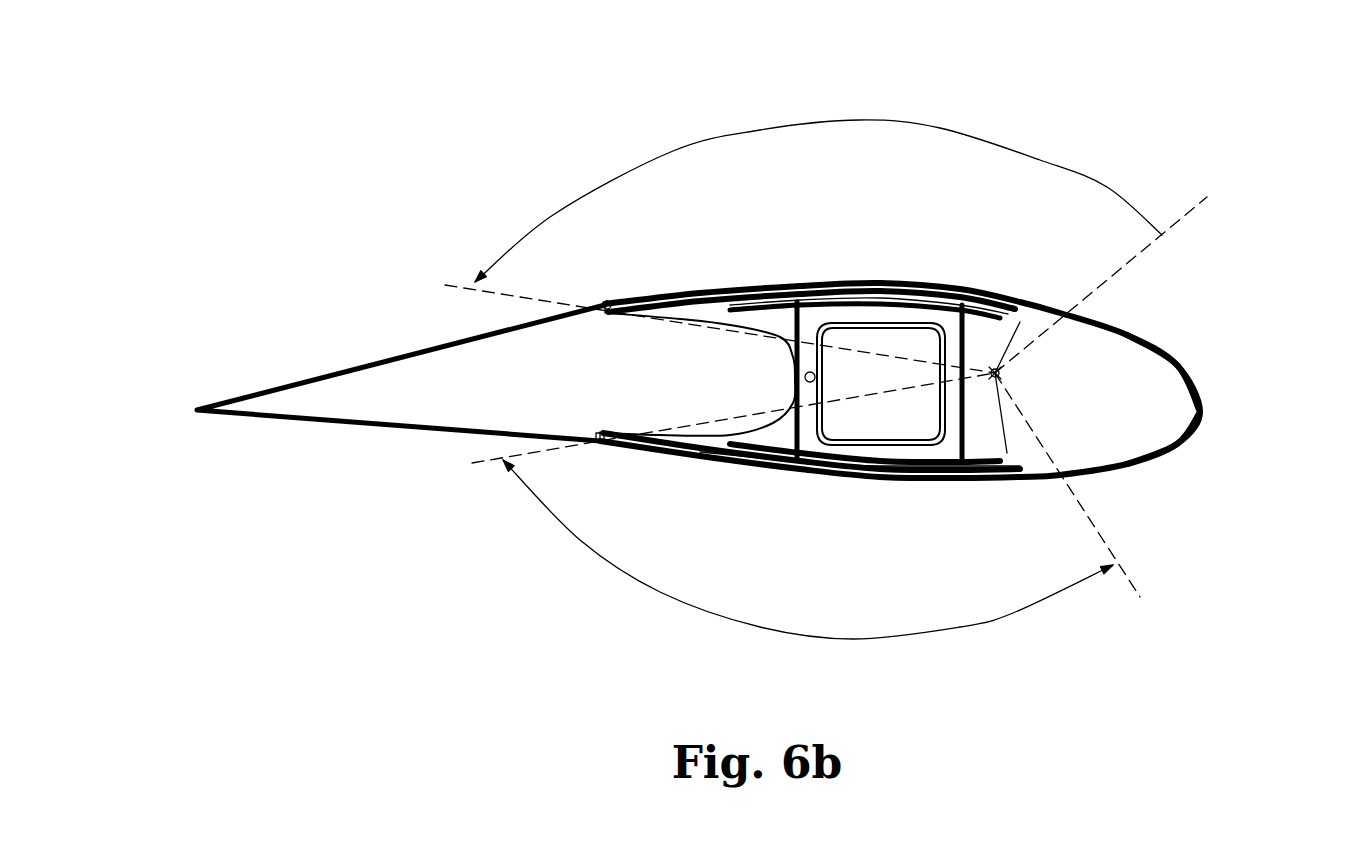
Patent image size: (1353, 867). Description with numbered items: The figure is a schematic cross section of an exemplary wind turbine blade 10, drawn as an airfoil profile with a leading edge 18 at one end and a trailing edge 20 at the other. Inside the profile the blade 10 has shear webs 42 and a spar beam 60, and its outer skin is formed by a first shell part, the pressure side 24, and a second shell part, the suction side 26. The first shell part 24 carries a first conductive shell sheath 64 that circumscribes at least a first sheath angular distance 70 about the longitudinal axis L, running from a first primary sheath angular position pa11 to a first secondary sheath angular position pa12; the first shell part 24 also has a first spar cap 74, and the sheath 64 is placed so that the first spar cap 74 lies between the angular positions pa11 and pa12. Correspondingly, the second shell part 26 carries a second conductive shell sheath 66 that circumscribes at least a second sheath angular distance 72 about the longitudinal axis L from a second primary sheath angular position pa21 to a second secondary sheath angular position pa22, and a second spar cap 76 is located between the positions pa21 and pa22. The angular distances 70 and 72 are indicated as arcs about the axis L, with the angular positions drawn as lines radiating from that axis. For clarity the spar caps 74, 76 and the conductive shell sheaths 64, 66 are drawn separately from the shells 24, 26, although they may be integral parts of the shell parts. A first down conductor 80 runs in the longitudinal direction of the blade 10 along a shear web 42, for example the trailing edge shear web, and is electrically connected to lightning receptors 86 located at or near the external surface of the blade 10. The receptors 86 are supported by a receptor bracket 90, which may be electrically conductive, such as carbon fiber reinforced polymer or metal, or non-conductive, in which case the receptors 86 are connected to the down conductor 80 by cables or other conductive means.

The wind turbine blade 10 is at (1235, 545).
The leading edge 18 is at (1205, 410).
The trailing edge 20 is at (196, 405).
The pressure side 24 is at (1022, 483).
The suction side 26 is at (1032, 297).
The shear web 42 is at (950, 448).
The spar beam 60 is at (877, 322).
The first conductive shell sheath 64 is at (950, 483).
The second conductive shell sheath 66 is at (958, 283).
The first sheath angular distance 70 is at (637, 580).
The second sheath angular distance 72 is at (1100, 180).
The first spar cap 74 is at (1007, 453).
The second spar cap 76 is at (1020, 322).
The first down conductor 80 is at (797, 300).
The lightning receptors 86 is at (601, 313).
The receptor bracket 90 is at (740, 435).
The longitudinal axis L is at (995, 373).
The first primary sheath angular position pa11 is at (692, 430).
The first secondary sheath angular position pa12 is at (1085, 509).
The second primary sheath angular position pa21 is at (1133, 271).
The second secondary sheath angular position pa22 is at (679, 321).